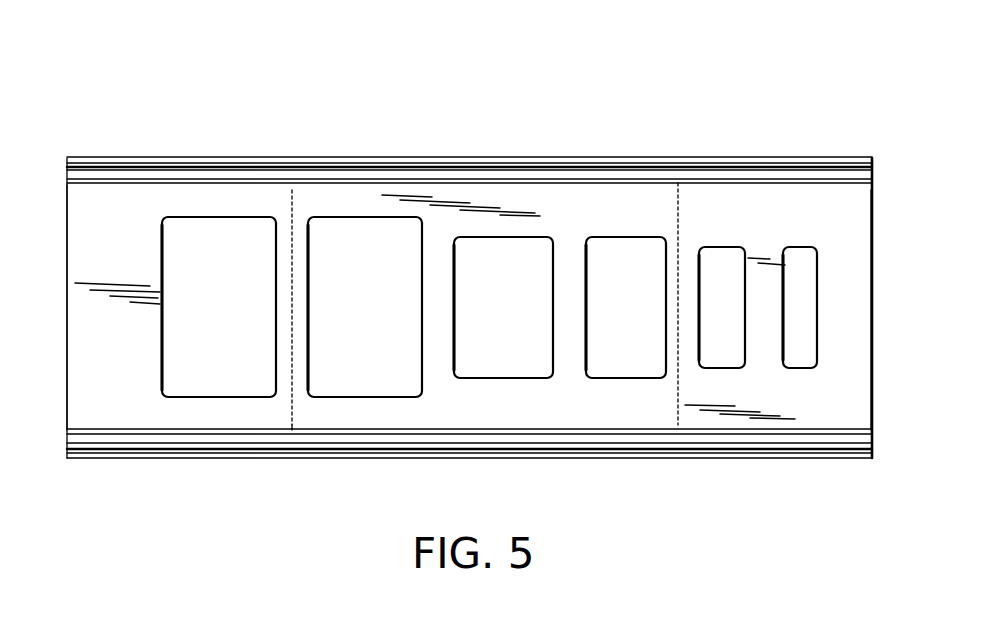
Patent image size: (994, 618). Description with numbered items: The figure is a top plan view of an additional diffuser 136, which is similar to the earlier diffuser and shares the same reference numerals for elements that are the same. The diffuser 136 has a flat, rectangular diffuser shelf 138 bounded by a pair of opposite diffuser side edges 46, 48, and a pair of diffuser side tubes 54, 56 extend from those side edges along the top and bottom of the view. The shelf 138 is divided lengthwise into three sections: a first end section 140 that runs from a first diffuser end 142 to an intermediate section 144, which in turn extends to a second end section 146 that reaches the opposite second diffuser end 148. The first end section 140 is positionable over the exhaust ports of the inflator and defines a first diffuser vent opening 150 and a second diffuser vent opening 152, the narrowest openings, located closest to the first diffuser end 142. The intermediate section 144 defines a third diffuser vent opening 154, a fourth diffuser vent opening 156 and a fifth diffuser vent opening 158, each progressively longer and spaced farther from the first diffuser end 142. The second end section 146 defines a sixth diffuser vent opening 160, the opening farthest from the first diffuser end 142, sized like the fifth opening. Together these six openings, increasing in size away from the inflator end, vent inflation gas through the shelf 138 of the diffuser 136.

The diffuser 136 is at (458, 97).
The diffuser shelf 138 is at (640, 203).
The first end section 140 is at (790, 198).
The first diffuser end 142 is at (872, 190).
The intermediate section 144 is at (517, 195).
The second end section 146 is at (193, 190).
The second diffuser end 148 is at (67, 205).
The first diffuser vent opening 150 is at (795, 370).
The second diffuser vent opening 152 is at (712, 370).
The third diffuser vent opening 154 is at (640, 380).
The fourth diffuser vent opening 156 is at (525, 380).
The fifth diffuser vent opening 158 is at (390, 400).
The sixth diffuser vent opening 160 is at (247, 400).
The diffuser side edge 46 is at (310, 420).
The diffuser side edge 48 is at (325, 190).
The diffuser side tube 54 is at (383, 453).
The diffuser side tube 56 is at (377, 168).